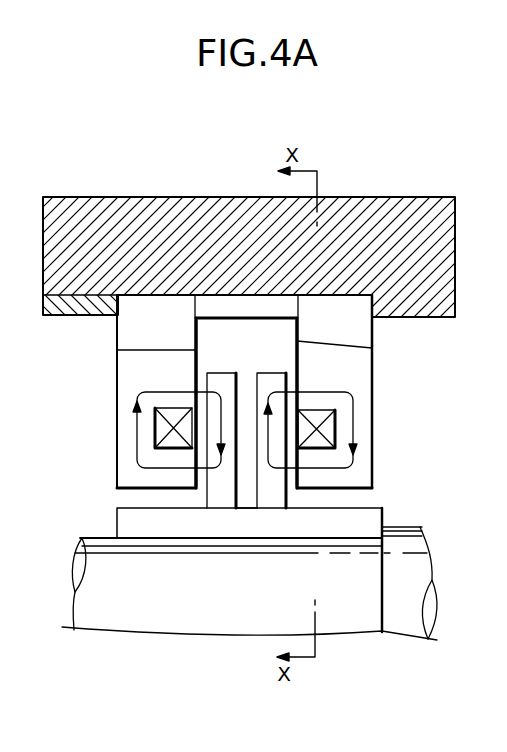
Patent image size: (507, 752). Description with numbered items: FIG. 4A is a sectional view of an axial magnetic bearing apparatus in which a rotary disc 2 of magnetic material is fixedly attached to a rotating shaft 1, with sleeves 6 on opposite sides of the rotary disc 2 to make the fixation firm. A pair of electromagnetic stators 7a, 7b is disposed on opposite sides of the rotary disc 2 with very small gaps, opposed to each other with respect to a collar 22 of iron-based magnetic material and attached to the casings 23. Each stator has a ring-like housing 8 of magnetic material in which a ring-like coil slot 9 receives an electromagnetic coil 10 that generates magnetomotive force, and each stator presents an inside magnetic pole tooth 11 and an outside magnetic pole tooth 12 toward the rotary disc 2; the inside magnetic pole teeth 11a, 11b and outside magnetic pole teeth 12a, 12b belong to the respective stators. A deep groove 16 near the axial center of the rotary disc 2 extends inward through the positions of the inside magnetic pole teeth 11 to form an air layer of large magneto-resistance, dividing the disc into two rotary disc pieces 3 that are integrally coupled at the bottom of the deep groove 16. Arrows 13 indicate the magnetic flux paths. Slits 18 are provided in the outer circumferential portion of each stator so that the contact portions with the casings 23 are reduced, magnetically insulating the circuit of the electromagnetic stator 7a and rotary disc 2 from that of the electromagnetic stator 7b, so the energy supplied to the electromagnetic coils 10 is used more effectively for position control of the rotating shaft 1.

The rotating shaft 1 is at (98, 567).
The rotary disc 2 is at (290, 366).
The rotary disc pieces 3 is at (213, 375).
The sleeves 6 is at (135, 523).
The electromagnetic stator 7a is at (118, 360).
The electromagnetic stator 7b is at (375, 383).
The ring-like housing 8 is at (138, 356).
The coil slot 9 is at (155, 428).
The electromagnetic coil 10 is at (162, 441).
The inside magnetic pole tooth 11 is at (197, 597).
The inside magnetic pole tooth 11a is at (198, 474).
The inside magnetic pole tooth 11b is at (287, 486).
The outside magnetic pole tooth 12 is at (449, 328).
The outside magnetic pole tooth 12a is at (193, 357).
The outside magnetic pole tooth 12b is at (296, 362).
The magnetic flux 13 is at (135, 402).
The deep groove 16 is at (249, 502).
The slit 18 is at (150, 312).
The collar 22 is at (242, 305).
The casing 23 is at (83, 212).